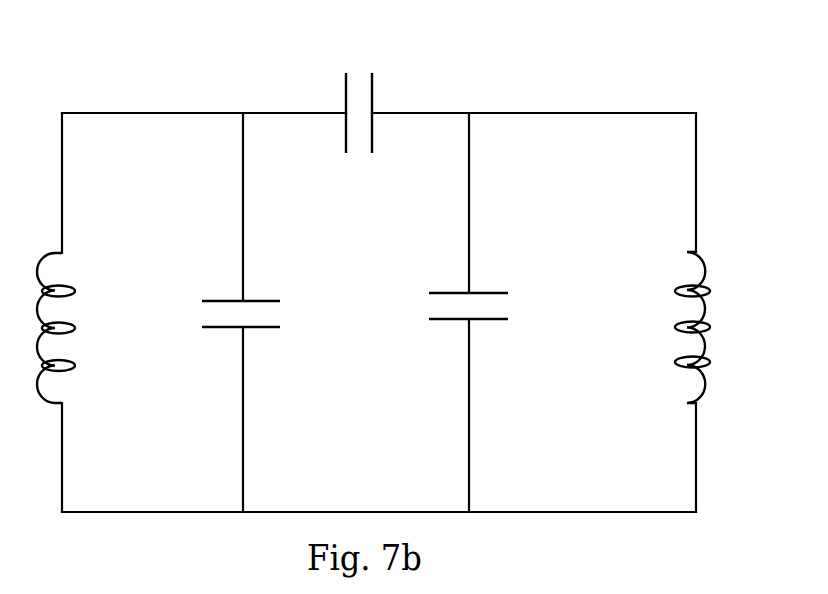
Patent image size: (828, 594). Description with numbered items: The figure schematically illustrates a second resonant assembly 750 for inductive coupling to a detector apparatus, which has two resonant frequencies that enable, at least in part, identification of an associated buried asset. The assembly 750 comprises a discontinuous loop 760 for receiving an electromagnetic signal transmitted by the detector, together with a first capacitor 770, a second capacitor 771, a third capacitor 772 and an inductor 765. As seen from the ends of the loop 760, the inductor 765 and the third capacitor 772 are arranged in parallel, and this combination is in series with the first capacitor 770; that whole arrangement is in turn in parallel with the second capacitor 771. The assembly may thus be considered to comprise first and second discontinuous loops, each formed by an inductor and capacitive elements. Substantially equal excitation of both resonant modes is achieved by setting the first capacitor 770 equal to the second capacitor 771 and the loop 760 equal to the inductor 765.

The second resonant assembly 750 is at (374, 271).
The discontinuous loop 760 is at (92, 328).
The inductor 765 is at (654, 327).
The first capacitor 770 is at (357, 92).
The second capacitor 771 is at (272, 291).
The third capacitor 772 is at (497, 283).